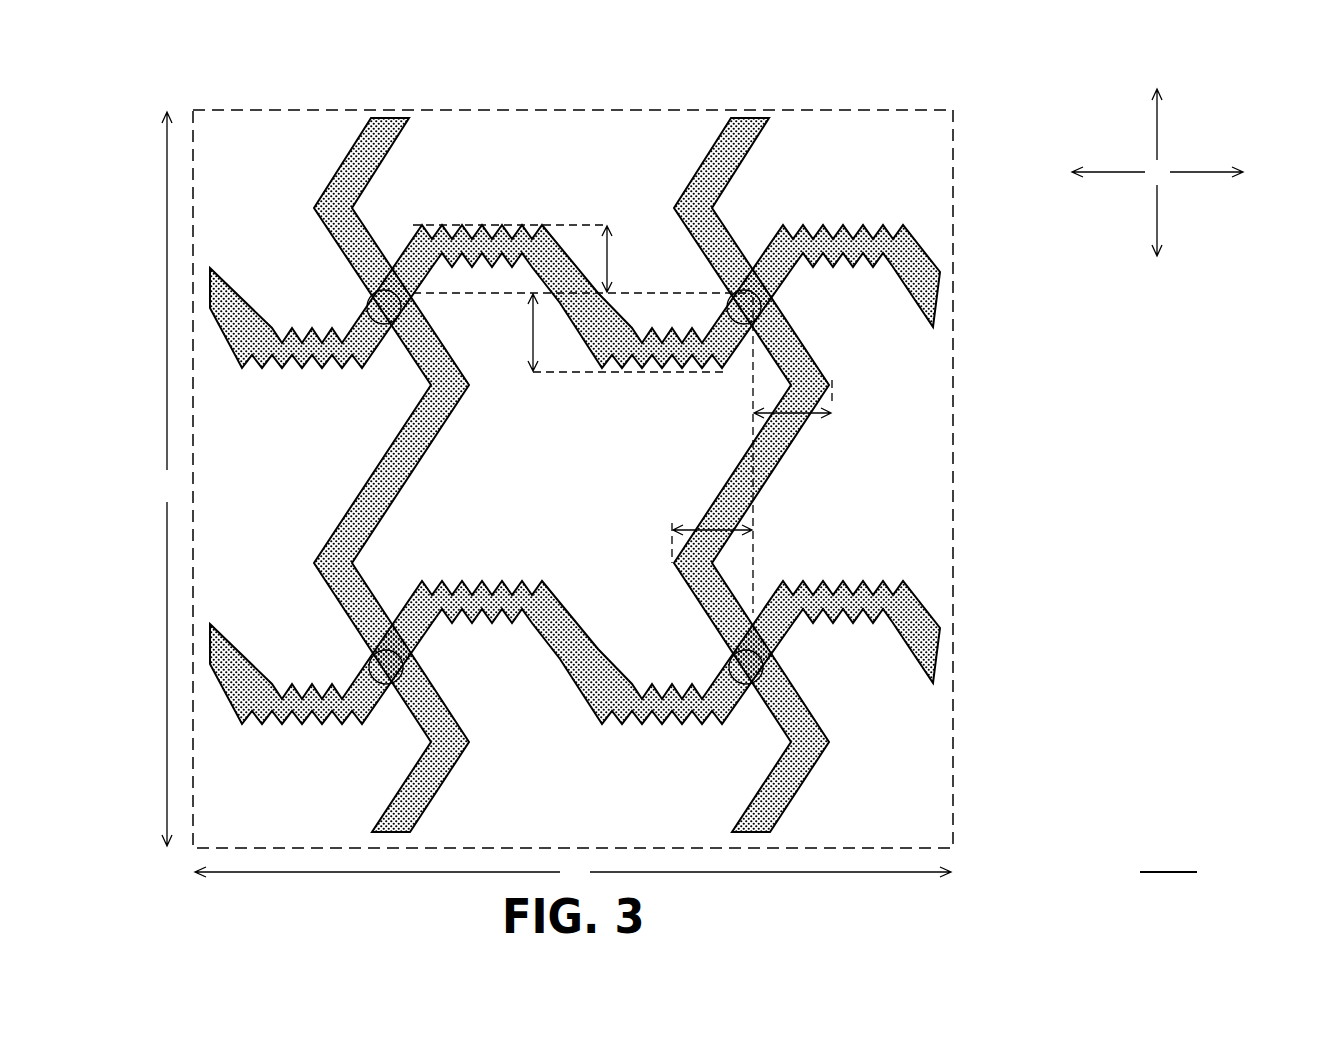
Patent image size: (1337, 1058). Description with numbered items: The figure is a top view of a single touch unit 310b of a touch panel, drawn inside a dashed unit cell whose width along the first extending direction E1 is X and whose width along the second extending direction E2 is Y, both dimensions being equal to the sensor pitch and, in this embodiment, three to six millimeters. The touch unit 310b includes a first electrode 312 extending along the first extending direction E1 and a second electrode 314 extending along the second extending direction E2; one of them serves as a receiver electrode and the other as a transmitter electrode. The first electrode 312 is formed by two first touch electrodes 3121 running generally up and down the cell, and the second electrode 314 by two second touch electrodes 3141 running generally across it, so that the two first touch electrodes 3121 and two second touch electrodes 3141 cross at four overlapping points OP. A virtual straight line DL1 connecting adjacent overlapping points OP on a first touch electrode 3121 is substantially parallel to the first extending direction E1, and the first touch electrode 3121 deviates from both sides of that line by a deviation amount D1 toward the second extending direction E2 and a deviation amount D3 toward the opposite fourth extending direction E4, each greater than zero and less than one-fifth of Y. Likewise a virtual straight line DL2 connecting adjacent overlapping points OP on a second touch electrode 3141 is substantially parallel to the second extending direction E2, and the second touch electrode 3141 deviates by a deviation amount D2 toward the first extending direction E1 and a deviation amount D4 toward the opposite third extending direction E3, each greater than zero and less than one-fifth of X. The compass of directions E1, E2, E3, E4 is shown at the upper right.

The first electrode 312 is at (788, 70).
The first touch electrode 3121 is at (585, 447).
The second electrode 314 is at (1020, 275).
The second touch electrode 3141 is at (615, 474).
The overlapping point OP is at (377, 291).
The virtual straight line DL1 is at (773, 470).
The virtual straight line DL2 is at (664, 293).
The first deviation amount D1 is at (792, 455).
The second deviation amount D2 is at (583, 259).
The deviation amount D3 is at (712, 531).
The deviation amount D4 is at (611, 333).
The width in first extending direction X is at (169, 479).
The width in second extending direction Y is at (573, 872).
The first extending direction E1 is at (1158, 106).
The second extending direction E2 is at (1222, 170).
The third extending direction E3 is at (1158, 240).
The fourth extending direction E4 is at (1092, 170).
The touch unit 310b is at (1168, 858).